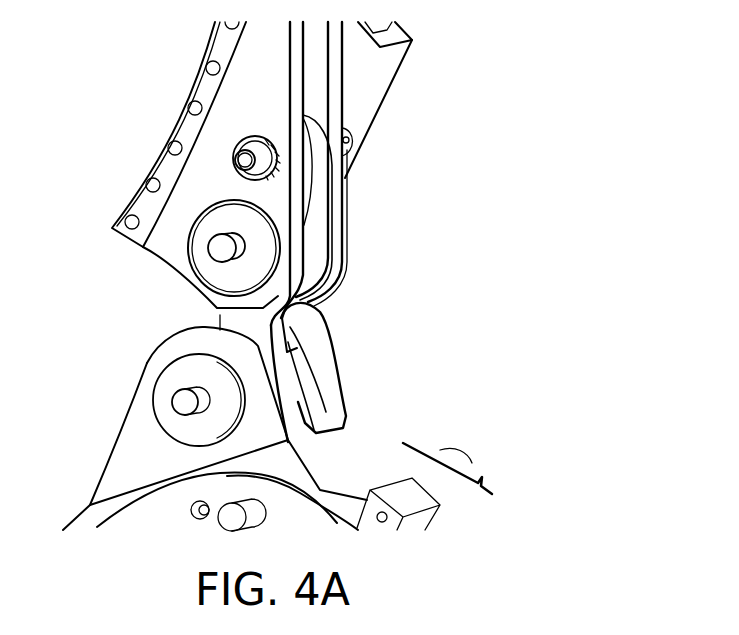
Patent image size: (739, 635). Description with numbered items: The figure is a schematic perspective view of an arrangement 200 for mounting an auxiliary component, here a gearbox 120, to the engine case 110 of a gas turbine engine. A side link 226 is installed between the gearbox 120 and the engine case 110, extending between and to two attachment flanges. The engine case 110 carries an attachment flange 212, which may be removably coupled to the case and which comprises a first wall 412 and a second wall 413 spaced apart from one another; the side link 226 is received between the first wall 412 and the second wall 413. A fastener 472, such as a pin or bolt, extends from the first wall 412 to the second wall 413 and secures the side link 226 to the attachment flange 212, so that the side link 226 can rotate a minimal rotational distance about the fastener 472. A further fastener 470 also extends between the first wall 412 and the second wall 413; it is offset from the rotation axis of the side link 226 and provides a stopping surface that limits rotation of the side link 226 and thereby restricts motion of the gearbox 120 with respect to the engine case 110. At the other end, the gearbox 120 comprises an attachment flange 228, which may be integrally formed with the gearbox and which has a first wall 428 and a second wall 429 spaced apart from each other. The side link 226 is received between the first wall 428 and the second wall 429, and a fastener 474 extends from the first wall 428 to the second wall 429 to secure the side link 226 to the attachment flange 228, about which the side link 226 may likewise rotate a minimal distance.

The engine case 110 is at (188, 90).
The gearbox 120 is at (438, 453).
The arrangement 200 is at (477, 148).
The attachment flange 212 is at (343, 220).
The side link 226 is at (315, 260).
The attachment flange 228 is at (320, 342).
The first wall 412 is at (290, 95).
The second wall 413 is at (338, 77).
The first wall 428 is at (282, 402).
The second wall 429 is at (333, 368).
The fastener 470 is at (233, 163).
The fastener 472 is at (215, 262).
The fastener 474 is at (175, 410).